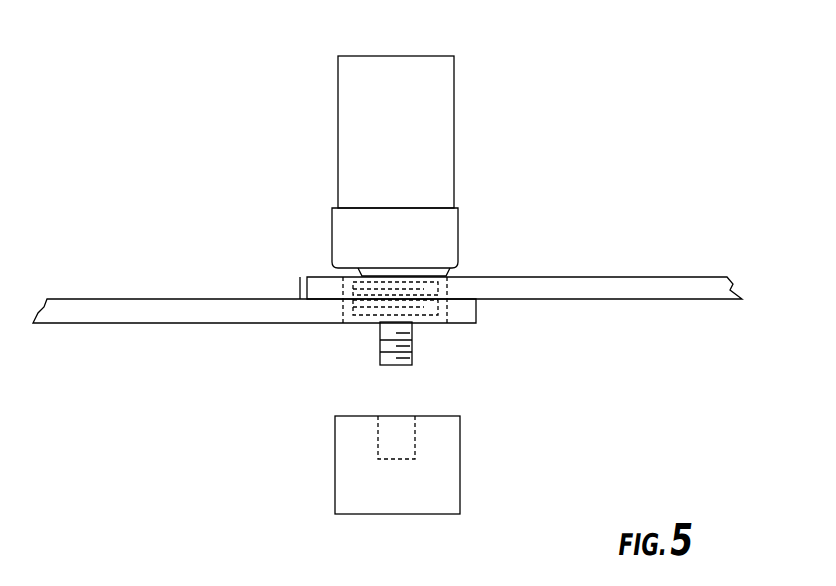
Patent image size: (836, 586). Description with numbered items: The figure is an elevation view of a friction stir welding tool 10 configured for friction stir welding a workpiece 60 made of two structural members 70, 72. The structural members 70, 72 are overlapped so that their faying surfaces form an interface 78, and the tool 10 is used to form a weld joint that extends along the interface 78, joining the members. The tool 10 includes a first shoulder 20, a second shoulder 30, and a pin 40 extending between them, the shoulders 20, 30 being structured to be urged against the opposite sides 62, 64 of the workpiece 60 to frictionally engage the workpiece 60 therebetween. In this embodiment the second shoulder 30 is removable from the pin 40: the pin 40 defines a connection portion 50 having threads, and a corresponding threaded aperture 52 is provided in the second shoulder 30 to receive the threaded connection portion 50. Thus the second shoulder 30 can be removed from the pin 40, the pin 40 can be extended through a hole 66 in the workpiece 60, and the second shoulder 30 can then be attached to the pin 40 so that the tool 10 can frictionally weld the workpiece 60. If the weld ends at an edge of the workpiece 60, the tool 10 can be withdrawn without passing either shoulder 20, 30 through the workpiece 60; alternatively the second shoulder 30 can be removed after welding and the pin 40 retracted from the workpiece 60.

The friction stir welding tool 10 is at (454, 97).
The first shoulder 20 is at (458, 272).
The second shoulder 30 is at (432, 446).
The pin 40 is at (404, 365).
The connection portion 50 is at (413, 345).
The threaded aperture 52 is at (415, 448).
The workpiece 60 is at (401, 267).
The side of the workpiece 62 is at (595, 277).
The side of the workpiece 64 is at (263, 325).
The hole 66 is at (341, 290).
The structural member 70 is at (538, 236).
The structural member 72 is at (254, 295).
The interface 78 is at (301, 291).